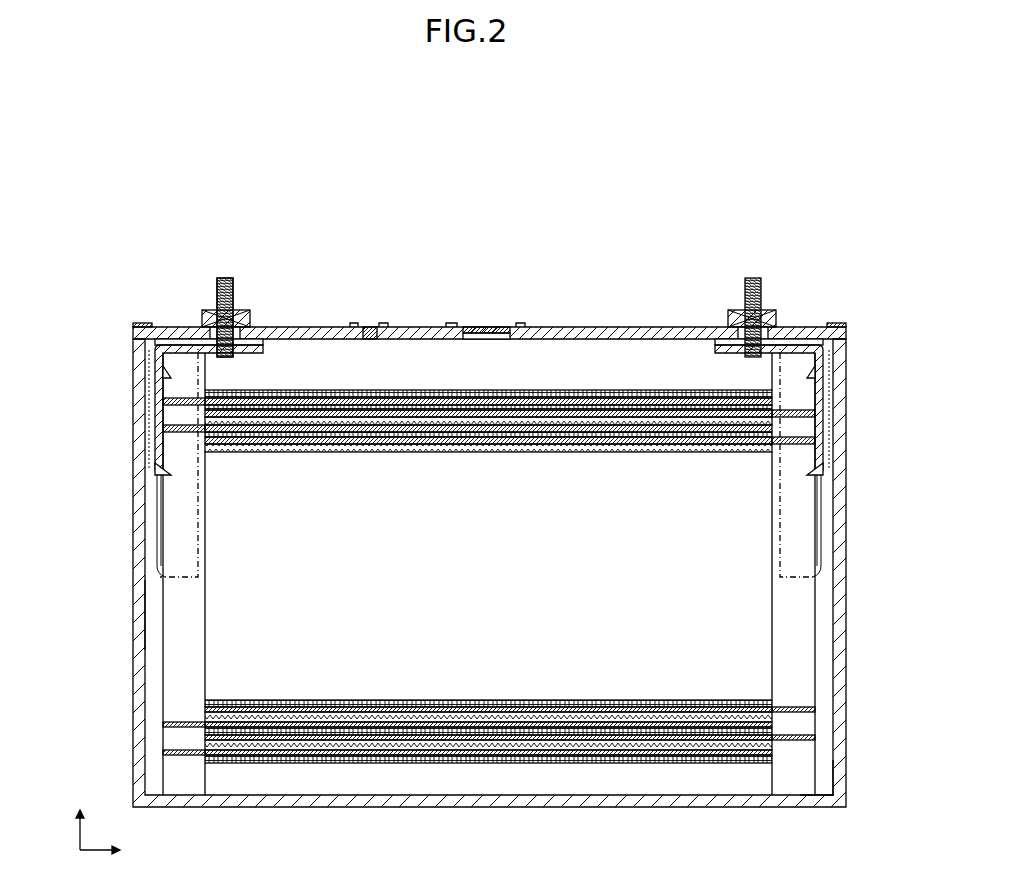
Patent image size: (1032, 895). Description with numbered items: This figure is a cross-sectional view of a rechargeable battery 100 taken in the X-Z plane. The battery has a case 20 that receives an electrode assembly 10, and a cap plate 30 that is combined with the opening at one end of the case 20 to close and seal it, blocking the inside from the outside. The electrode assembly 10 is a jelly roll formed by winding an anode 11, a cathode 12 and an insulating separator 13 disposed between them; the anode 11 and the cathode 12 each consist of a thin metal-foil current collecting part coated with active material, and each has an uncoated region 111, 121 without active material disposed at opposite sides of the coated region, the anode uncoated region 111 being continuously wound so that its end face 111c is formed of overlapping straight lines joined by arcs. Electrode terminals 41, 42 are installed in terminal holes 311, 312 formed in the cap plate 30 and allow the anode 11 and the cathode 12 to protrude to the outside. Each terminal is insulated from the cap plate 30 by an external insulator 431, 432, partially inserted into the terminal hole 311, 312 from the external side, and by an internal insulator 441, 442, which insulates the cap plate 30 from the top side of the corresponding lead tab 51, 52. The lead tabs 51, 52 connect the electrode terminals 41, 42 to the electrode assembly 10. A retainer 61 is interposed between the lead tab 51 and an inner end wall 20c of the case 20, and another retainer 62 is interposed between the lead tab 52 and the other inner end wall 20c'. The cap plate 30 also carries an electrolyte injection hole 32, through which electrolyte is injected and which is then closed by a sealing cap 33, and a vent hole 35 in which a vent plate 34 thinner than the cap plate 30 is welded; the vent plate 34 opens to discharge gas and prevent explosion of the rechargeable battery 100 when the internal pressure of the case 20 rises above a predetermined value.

The rechargeable battery 100 is at (456, 122).
The electrode assembly 10 is at (488, 632).
The anode 11 is at (304, 757).
The uncoated region 111 is at (185, 757).
The end face 111c is at (164, 698).
The cathode 12 is at (374, 742).
The uncoated region 121 is at (800, 742).
The separator 13 is at (497, 728).
The case 20 is at (690, 800).
The inner end wall 20c is at (121, 615).
The inner end wall 20c' is at (821, 817).
The cap plate 30 is at (620, 326).
The terminal hole 311 is at (242, 320).
The terminal hole 312 is at (731, 322).
The electrolyte injection hole 32 is at (374, 332).
The sealing cap 33 is at (357, 325).
The vent plate 34 is at (498, 326).
The vent hole 35 is at (492, 330).
The electrode terminal 41 is at (226, 284).
The electrode terminal 42 is at (751, 276).
The external insulator 431 is at (208, 322).
The external insulator 432 is at (761, 318).
The internal insulator 441 is at (190, 338).
The internal insulator 442 is at (770, 338).
The lead tab 51 is at (146, 338).
The lead tab 52 is at (823, 340).
The retainer 61 is at (150, 396).
The retainer 62 is at (823, 404).